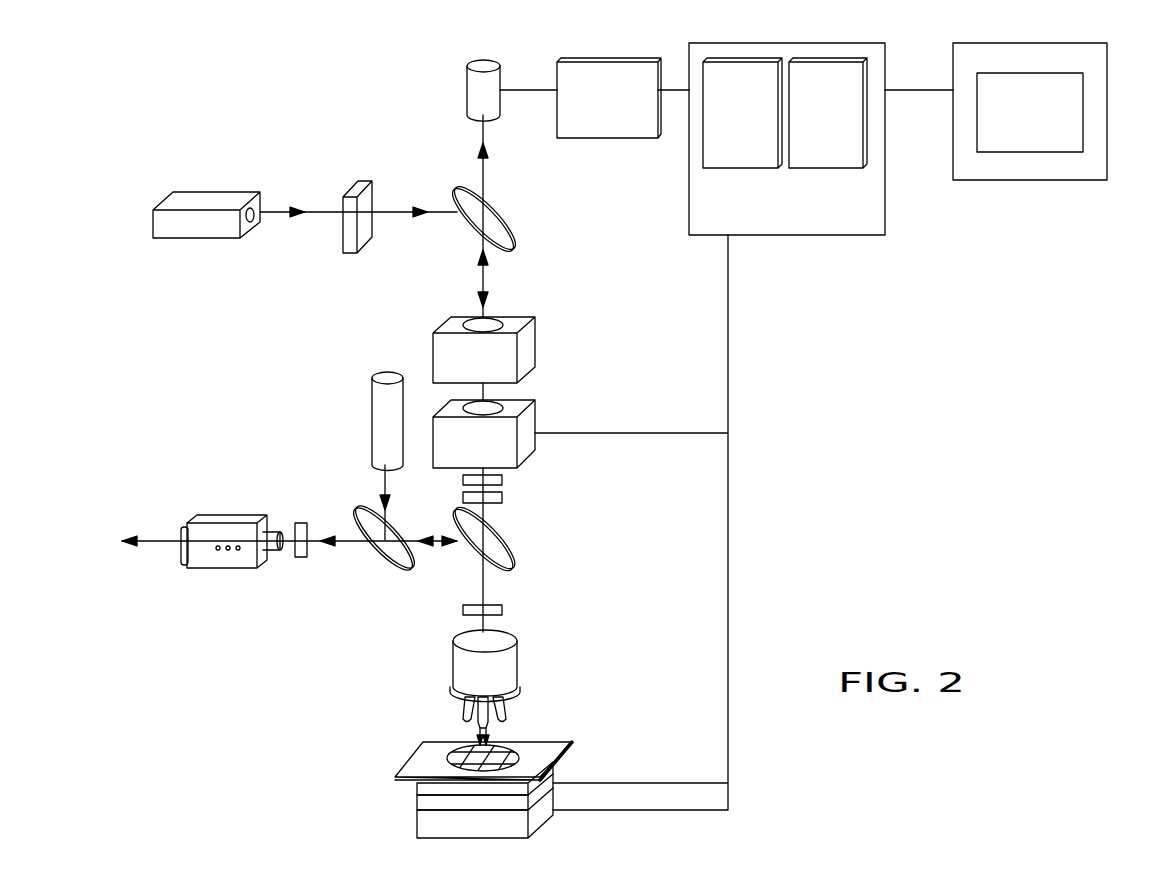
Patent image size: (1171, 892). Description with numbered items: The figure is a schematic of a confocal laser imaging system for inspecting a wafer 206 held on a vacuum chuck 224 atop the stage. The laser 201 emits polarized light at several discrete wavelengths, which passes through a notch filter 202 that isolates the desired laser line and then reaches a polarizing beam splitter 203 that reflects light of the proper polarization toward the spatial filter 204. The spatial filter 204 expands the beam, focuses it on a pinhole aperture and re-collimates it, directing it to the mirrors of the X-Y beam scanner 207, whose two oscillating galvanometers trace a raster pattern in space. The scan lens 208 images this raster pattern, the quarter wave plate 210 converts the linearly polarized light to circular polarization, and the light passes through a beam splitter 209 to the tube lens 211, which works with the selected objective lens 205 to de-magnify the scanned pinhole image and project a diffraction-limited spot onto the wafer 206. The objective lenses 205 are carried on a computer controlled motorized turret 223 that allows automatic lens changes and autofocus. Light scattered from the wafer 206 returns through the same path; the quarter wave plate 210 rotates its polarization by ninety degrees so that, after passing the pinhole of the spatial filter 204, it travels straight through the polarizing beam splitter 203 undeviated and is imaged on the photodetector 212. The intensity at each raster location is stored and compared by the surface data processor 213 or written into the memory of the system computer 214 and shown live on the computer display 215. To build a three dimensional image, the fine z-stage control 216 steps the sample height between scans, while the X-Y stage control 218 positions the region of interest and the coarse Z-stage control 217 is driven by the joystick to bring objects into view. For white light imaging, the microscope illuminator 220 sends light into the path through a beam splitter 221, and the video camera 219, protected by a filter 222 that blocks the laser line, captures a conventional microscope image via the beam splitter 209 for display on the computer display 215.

The laser 201 is at (215, 190).
The notch filter 202 is at (355, 185).
The polarizing beam splitter 203 is at (518, 236).
The spatial filter 204 is at (530, 345).
The objective lens 205 is at (460, 708).
The wafer 206 is at (507, 757).
The X-Y beam scanner 207 is at (535, 418).
The scan lens 208 is at (502, 480).
The beam splitter 209 is at (505, 565).
The quarter wave plate 210 is at (502, 498).
The tube lens 211 is at (502, 610).
The photodetector 212 is at (467, 88).
The surface data processor 213 is at (605, 62).
The system computer 214 is at (787, 43).
The computer display 215 is at (1107, 110).
The fine z-stage control 216 is at (417, 789).
The coarse Z-stage control 217 is at (417, 805).
The X-Y stage control 218 is at (417, 823).
The video camera 219 is at (218, 568).
The microscope illuminator 220 is at (372, 420).
The beam splitter 221 is at (397, 567).
The filter 222 is at (297, 523).
The motorized turret 223 is at (517, 668).
The vacuum chuck 224 is at (563, 753).